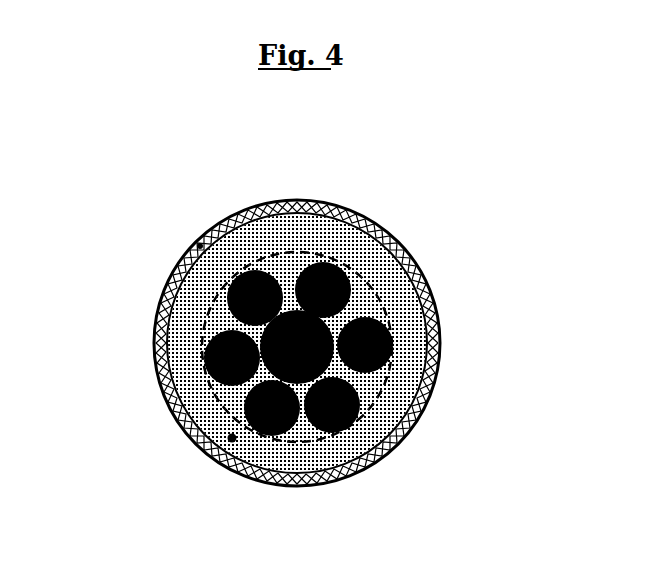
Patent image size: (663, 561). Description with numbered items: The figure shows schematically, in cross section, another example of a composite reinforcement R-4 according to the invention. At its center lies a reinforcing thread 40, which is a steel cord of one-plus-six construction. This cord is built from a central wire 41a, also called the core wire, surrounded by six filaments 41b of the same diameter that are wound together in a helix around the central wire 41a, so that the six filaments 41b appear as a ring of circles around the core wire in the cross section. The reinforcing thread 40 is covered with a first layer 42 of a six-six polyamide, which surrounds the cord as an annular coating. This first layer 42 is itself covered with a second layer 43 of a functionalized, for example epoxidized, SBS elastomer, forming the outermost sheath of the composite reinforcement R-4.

The reinforcing thread 40 is at (279, 278).
The central wire 41a is at (297, 350).
The filaments 41b is at (385, 360).
The first layer 42 is at (231, 440).
The second layer 43 is at (200, 247).
The composite reinforcement R-4 is at (412, 220).